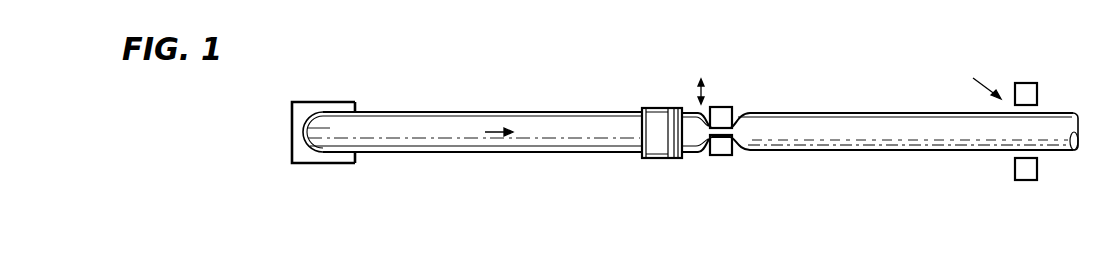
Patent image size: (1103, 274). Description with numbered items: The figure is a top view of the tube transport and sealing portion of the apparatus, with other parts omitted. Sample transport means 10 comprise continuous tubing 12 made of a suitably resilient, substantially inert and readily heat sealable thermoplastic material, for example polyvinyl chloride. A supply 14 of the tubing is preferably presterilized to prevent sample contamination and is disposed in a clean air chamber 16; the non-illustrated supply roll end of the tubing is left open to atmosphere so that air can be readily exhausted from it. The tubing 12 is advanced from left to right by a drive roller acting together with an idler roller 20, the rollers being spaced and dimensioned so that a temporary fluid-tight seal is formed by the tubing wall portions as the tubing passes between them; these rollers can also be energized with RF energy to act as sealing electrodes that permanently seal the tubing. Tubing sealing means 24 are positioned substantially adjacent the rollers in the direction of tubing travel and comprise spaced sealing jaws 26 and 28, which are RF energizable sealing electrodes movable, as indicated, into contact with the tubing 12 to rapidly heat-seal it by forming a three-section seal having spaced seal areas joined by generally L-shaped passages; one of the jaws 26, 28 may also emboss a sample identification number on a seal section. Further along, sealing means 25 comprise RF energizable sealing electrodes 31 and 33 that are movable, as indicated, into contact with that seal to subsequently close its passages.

The sample transport means 10 is at (492, 104).
The continuous tubing 12 is at (537, 155).
The supply of tubing 14 is at (310, 158).
The clean air chamber 16 is at (350, 165).
The idler roller 20 is at (650, 113).
The tubing sealing means 24 is at (723, 82).
The tubing sealing means 25 is at (972, 81).
The sealing jaw 26 is at (722, 110).
The sealing jaw 28 is at (725, 152).
The sealing electrode 31 is at (1032, 84).
The sealing electrode 33 is at (1032, 179).